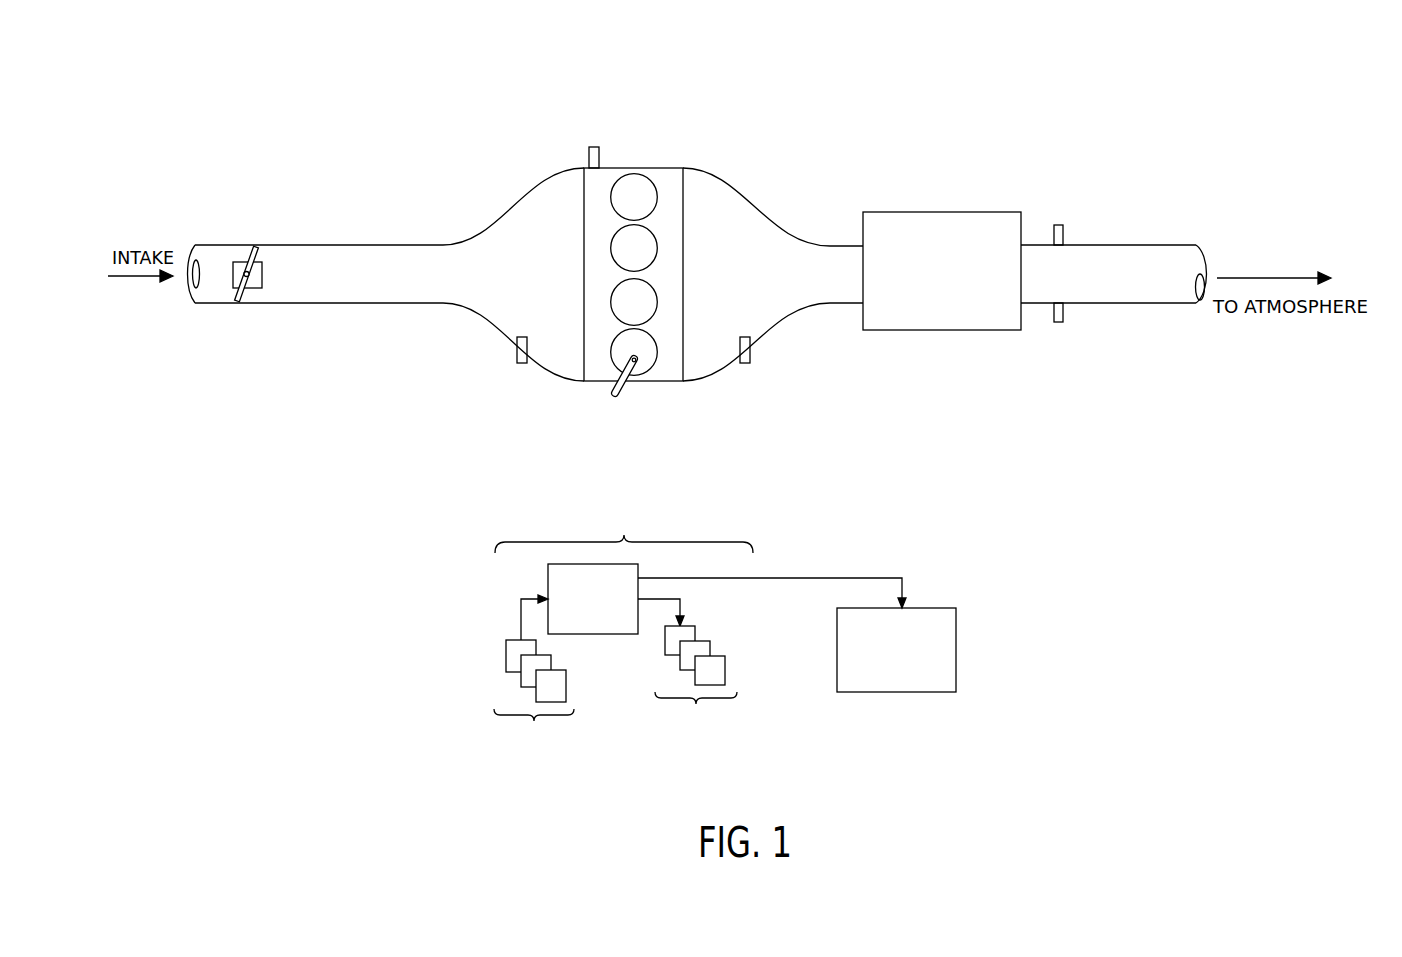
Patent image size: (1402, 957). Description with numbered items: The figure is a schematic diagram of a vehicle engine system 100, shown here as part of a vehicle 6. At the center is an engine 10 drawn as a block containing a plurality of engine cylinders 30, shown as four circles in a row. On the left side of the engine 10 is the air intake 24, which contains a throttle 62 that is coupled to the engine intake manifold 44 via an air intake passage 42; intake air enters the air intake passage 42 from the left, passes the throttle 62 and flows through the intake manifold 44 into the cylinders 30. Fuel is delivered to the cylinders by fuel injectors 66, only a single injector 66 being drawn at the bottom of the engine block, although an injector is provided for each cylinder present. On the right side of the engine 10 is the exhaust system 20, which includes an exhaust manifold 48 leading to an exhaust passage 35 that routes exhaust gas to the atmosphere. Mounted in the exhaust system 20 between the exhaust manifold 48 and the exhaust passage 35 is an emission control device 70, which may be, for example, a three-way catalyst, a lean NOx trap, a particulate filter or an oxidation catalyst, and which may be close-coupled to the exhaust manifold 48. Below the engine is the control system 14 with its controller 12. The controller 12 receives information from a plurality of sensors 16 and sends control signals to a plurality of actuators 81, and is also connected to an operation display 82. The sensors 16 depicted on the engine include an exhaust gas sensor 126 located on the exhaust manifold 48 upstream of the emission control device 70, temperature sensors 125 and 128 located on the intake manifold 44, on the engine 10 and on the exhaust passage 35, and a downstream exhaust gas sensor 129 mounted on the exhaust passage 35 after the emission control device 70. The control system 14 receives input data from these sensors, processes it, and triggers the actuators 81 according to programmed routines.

The vehicle 6 is at (1224, 105).
The engine 10 is at (683, 256).
The controller 12 is at (593, 599).
The control system 14 is at (725, 628).
The sensors 16 is at (534, 680).
The exhaust system 20 is at (1026, 168).
The air intake 24 is at (380, 212).
The engine cylinders 30 is at (657, 188).
The exhaust passage 35 is at (1155, 245).
The air intake passage 42 is at (297, 304).
The engine intake manifold 44 is at (555, 285).
The exhaust manifold 48 is at (765, 285).
The throttle 62 is at (262, 284).
The fuel injector 66 is at (625, 388).
The emission control device 70 is at (930, 318).
The actuators 81 is at (687, 673).
The operation display 82 is at (886, 685).
The vehicle engine system 100 is at (278, 168).
The temperature sensor 125 is at (517, 341).
The exhaust gas sensor 126 is at (750, 341).
The temperature sensor 128 is at (600, 163).
The downstream exhaust gas sensor 129 is at (1059, 323).